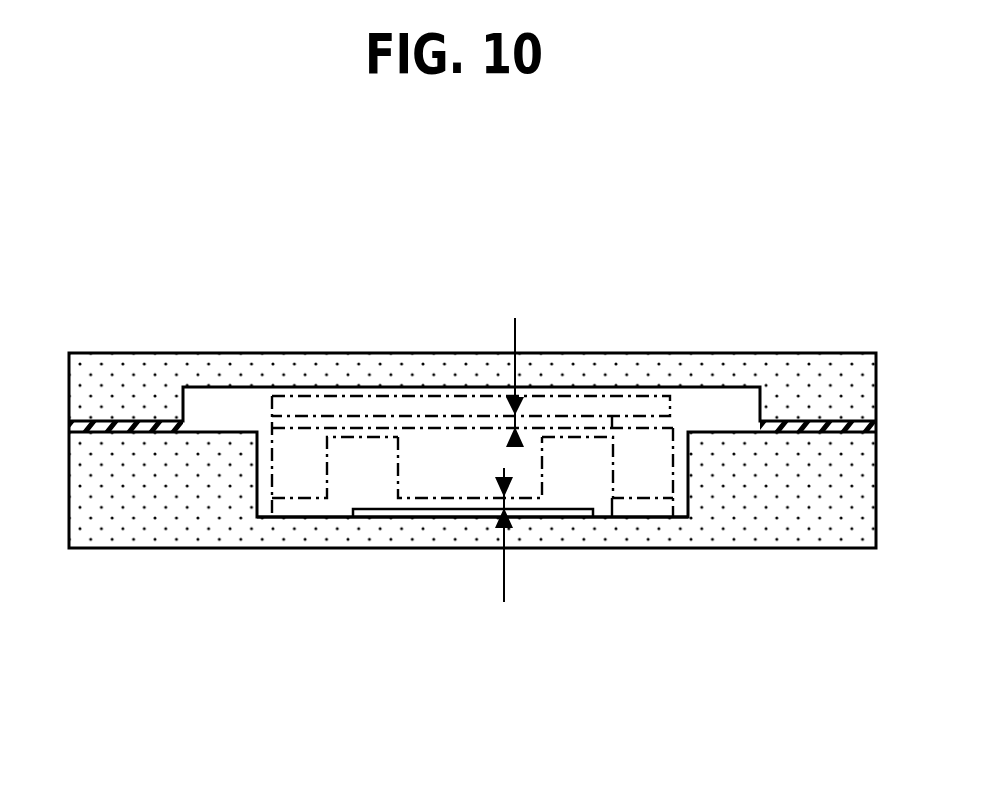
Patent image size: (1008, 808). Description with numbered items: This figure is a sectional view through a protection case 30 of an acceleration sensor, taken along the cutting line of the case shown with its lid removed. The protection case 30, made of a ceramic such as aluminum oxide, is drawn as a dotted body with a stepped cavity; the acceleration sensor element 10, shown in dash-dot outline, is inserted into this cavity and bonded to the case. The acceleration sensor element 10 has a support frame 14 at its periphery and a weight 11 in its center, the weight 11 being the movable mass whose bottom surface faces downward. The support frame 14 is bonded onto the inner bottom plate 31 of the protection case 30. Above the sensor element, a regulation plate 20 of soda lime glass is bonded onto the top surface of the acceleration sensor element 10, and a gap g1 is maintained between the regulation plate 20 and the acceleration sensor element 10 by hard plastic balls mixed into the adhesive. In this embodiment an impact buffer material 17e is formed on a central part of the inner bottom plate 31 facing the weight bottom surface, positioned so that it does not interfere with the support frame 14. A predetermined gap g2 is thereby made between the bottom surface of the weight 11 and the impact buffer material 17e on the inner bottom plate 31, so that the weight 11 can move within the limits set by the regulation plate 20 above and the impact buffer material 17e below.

The acceleration sensor element 10 is at (272, 457).
The weight 11 is at (448, 460).
The regulation plate 20 is at (640, 405).
The support frame 14 is at (638, 465).
The protection case 30 is at (137, 498).
The inner bottom plate 31 is at (353, 510).
The impact buffer material 17e is at (448, 508).
The gap g1 is at (540, 367).
The gap g2 is at (501, 555).